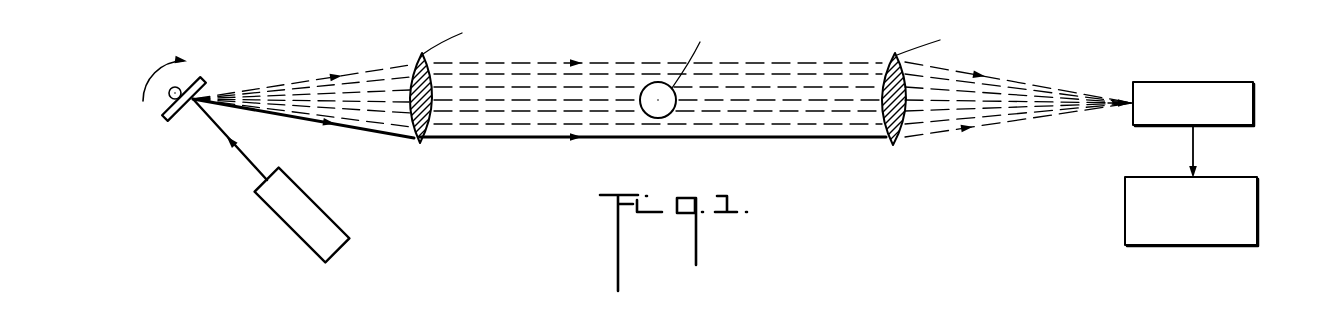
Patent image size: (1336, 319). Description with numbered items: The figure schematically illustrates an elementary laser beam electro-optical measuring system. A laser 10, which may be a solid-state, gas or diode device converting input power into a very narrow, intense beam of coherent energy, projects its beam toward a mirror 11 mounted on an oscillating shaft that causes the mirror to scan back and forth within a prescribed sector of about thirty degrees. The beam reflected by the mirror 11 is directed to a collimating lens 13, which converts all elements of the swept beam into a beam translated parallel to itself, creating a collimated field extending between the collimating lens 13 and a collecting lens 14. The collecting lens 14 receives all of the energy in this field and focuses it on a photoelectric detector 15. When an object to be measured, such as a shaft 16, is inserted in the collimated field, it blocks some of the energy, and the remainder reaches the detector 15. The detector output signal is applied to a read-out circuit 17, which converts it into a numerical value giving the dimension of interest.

The laser 10 is at (334, 218).
The mirror 11 is at (204, 79).
The collimating lens 13 is at (420, 143).
The collecting lens 14 is at (893, 145).
The photoelectric detector 15 is at (1255, 92).
The shaft 16 is at (658, 118).
The read-out circuit 17 is at (1259, 238).